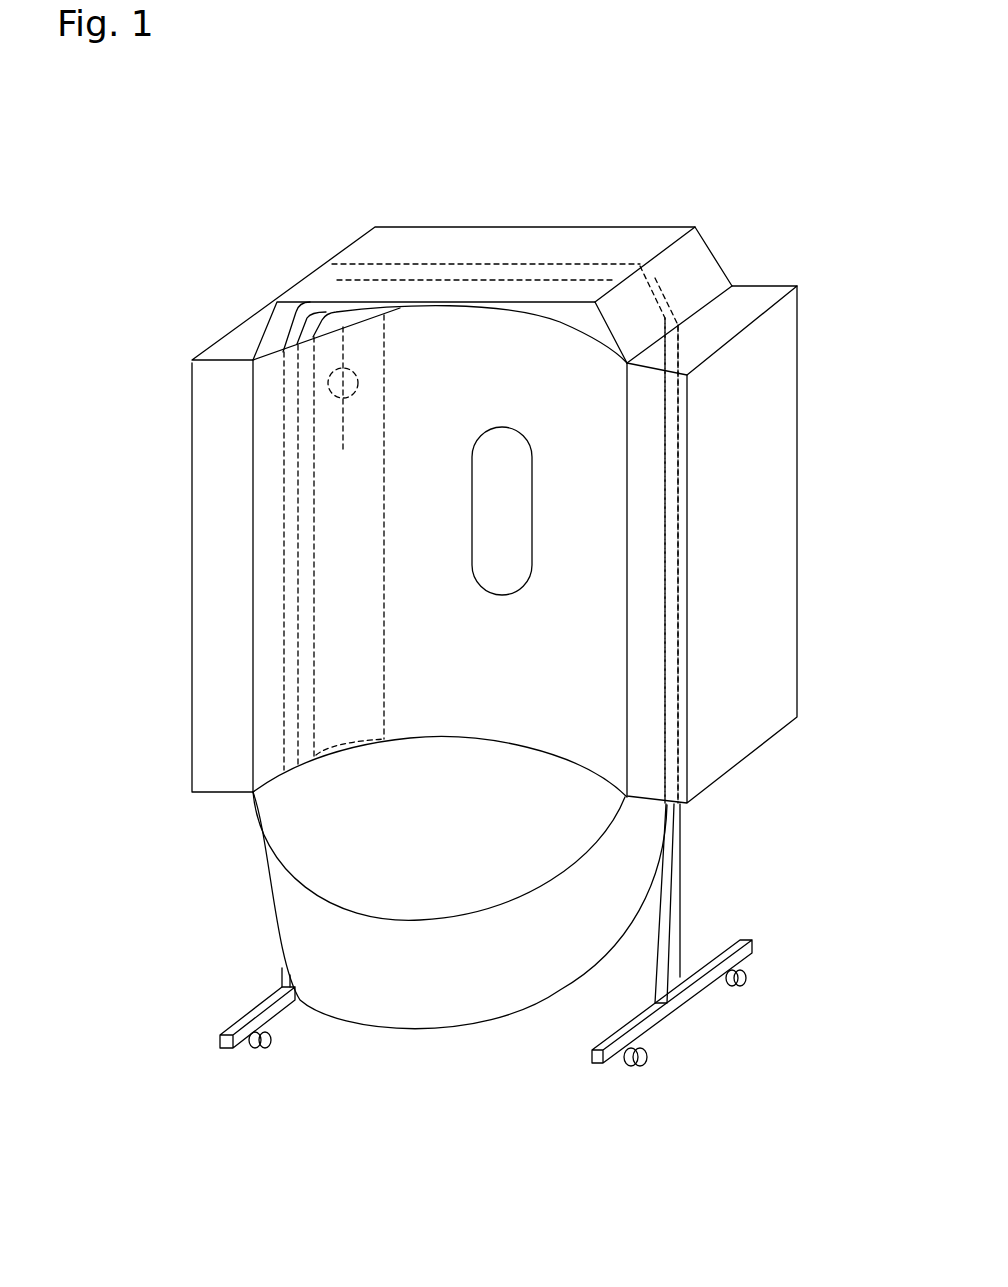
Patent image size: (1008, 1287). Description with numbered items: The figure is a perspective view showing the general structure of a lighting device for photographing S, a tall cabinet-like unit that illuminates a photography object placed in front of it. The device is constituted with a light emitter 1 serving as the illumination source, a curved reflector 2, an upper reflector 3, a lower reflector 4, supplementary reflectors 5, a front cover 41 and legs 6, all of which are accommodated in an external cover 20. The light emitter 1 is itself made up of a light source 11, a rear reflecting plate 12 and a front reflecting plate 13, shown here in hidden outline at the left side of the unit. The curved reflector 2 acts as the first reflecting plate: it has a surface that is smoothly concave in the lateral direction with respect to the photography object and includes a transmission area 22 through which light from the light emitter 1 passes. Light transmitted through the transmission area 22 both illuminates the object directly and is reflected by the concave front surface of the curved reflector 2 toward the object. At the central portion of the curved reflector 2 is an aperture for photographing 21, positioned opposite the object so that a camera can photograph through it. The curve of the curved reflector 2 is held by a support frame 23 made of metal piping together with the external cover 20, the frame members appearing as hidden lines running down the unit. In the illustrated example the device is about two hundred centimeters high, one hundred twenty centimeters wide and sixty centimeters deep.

The lighting device for photographing S is at (564, 190).
The light emitter 1 is at (330, 308).
The curved reflector 2 is at (590, 352).
The upper reflector 3 is at (562, 300).
The lower reflector 4 is at (320, 858).
The front cover 41 is at (392, 1000).
The supplementary reflectors 5 is at (212, 580).
The legs 6 is at (686, 912).
The light source 11 is at (284, 410).
The rear reflecting plate 12 is at (282, 311).
The front reflecting plate 13 is at (387, 333).
The external cover 20 is at (760, 437).
The aperture for photographing 21 is at (520, 513).
The transmission area 22 is at (347, 462).
The support frame 23 is at (690, 628).